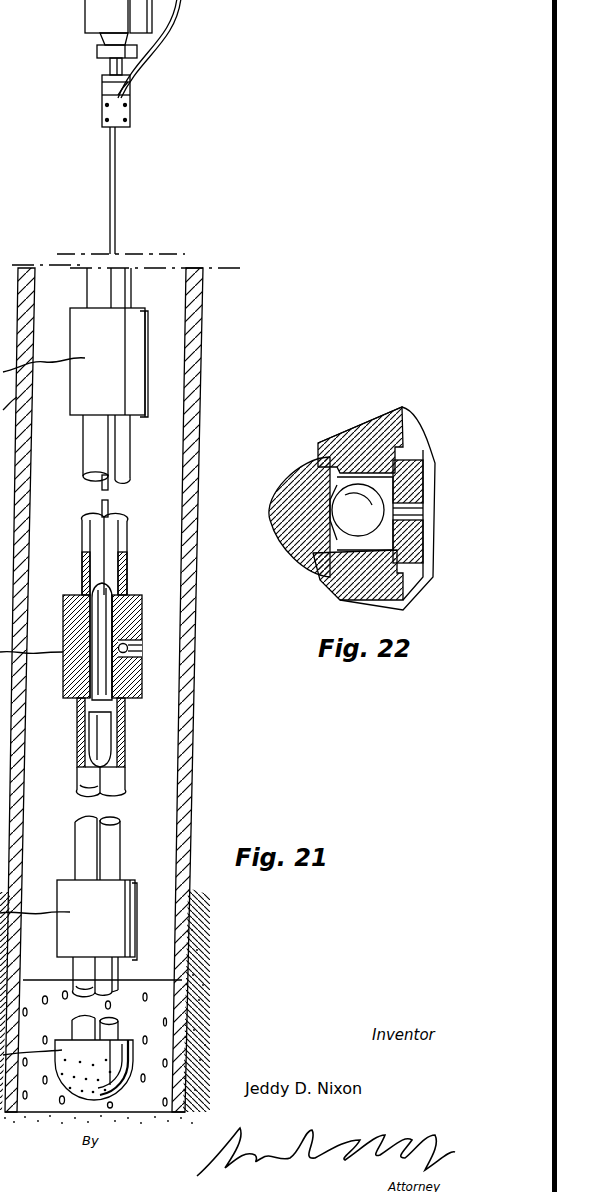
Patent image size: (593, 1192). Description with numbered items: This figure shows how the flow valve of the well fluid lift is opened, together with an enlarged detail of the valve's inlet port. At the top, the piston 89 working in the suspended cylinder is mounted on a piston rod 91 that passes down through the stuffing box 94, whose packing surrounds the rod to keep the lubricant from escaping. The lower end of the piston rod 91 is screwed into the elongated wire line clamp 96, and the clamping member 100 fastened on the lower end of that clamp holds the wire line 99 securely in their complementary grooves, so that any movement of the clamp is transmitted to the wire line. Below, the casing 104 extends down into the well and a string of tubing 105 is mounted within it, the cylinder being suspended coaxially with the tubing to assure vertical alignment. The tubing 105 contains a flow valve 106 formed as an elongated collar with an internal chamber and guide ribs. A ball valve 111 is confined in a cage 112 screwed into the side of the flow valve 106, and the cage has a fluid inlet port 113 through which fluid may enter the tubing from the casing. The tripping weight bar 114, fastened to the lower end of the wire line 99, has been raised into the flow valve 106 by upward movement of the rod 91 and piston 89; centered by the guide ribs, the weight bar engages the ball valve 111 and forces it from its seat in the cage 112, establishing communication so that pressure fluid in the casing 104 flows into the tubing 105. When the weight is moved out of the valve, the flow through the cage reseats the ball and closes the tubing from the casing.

In FIG. 21, the piston 89 is at (103, 15).
In FIG. 21, the stuffing box 94 is at (100, 52).
In FIG. 21, the piston rod 91 is at (108, 66).
In FIG. 21, the clamping member 100 is at (103, 112).
In FIG. 21, the wire line clamp 96 is at (130, 95).
In FIG. 21, the wire line 99 is at (178, 8).
In FIG. 21, the casing 104 is at (183, 812).
In FIG. 21, the tubing 105 is at (95, 443).
In FIG. 21, the ball valve 111 is at (140, 652).
In FIG. 22, the ball valve 111 is at (350, 507).
In FIG. 22, the cage 112 is at (390, 460).
In FIG. 22, the fluid inlet port 113 is at (412, 513).
In FIG. 21, the tripping weight bar 114 is at (127, 722).
In FIG. 22, the tripping weight bar 114 is at (295, 495).
In FIG. 22, the flow valve 106 is at (353, 590).